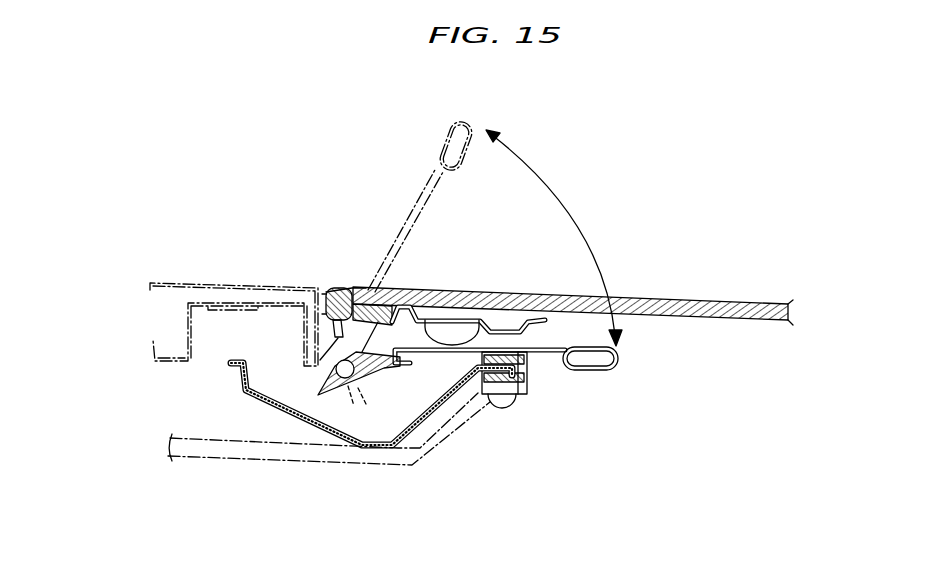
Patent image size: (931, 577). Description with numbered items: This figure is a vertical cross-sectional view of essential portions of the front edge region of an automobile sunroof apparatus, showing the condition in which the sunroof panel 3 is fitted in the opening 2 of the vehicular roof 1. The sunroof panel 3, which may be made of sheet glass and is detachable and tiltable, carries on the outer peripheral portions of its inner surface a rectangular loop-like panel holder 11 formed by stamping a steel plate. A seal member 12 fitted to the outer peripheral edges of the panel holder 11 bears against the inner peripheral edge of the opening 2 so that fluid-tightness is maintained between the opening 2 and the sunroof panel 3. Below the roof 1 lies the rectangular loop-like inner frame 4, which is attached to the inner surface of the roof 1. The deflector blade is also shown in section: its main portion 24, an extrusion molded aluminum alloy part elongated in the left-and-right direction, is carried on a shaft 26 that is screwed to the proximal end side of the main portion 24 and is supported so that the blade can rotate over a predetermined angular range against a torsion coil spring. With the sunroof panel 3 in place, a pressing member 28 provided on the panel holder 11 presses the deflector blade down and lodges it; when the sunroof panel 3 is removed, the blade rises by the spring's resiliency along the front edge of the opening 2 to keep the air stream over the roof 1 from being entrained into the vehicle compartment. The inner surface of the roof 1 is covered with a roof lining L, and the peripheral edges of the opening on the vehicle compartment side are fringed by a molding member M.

The vehicular roof 1 is at (240, 283).
The opening 2 is at (337, 286).
The seal member 12 is at (349, 287).
The sunroof panel 3 is at (708, 306).
The panel holder 11 is at (490, 306).
The pressing member 28 is at (440, 302).
The main portion 24 is at (548, 354).
The molding member M is at (504, 406).
The inner frame 4 is at (306, 424).
The shaft 26 is at (336, 366).
The roof lining L is at (221, 460).